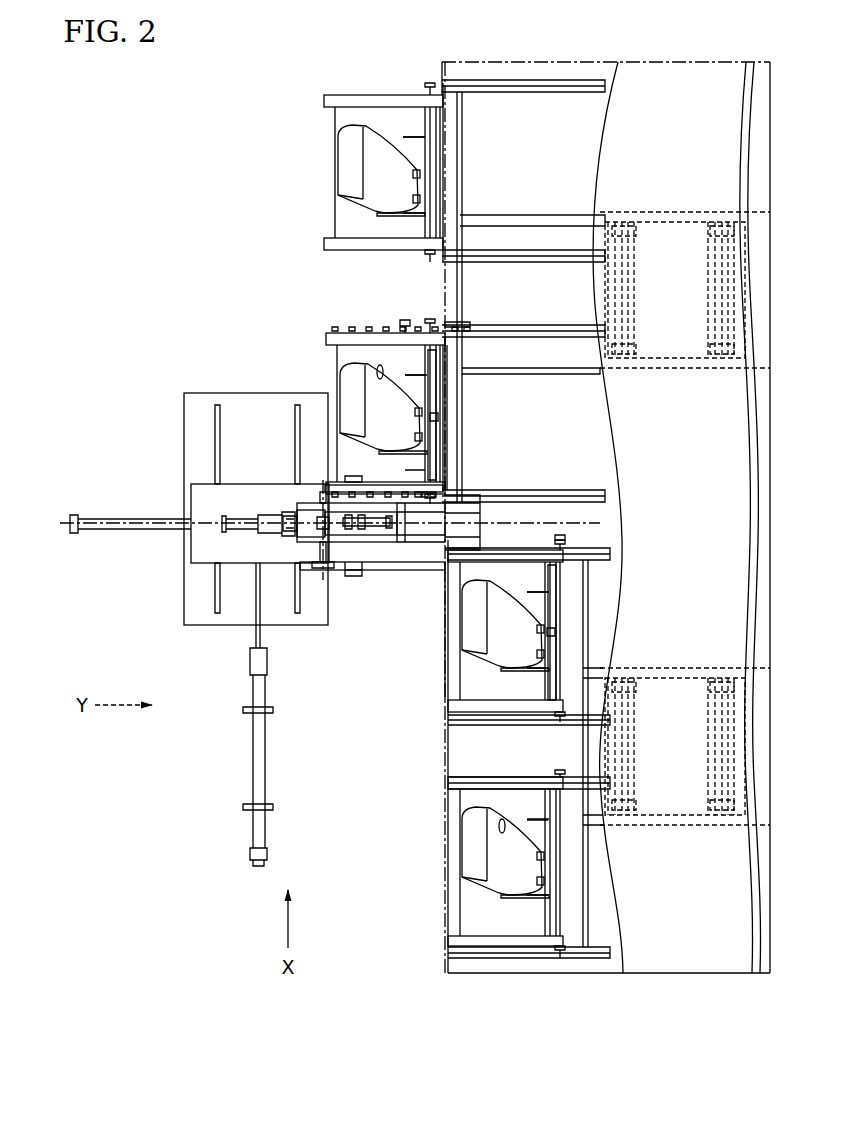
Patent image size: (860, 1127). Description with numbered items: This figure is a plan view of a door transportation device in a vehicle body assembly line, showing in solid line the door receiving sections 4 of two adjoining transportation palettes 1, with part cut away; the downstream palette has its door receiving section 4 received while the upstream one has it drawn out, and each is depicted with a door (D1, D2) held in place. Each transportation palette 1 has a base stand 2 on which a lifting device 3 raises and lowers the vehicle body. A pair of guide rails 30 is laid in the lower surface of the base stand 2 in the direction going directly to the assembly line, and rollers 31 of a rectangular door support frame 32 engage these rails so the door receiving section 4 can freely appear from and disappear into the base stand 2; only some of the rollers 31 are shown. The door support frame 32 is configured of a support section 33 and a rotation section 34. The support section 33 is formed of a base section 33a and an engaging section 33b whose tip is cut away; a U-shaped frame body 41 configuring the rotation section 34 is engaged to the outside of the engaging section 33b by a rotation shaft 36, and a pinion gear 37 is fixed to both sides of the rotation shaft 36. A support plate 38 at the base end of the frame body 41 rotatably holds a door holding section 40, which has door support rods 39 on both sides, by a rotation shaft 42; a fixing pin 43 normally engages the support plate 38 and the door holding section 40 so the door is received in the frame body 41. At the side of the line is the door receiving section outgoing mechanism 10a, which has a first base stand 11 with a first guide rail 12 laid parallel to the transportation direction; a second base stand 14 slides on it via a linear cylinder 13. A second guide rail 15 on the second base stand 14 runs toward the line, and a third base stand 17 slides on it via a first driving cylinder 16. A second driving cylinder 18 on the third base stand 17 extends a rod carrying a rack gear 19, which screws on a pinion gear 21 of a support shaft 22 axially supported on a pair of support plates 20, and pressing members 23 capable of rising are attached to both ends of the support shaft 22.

The transportation palette 1 is at (408, 72).
The base stand 2 is at (486, 72).
The lifting device 3 is at (652, 210).
The door receiving section 4 is at (318, 213).
The door receiving section outgoing mechanism 10a is at (330, 571).
The first base stand 11 is at (197, 427).
The first guide rail 12 is at (217, 402).
The linear cylinder 13 is at (253, 758).
The second base stand 14 is at (203, 495).
The second guide rail 15 is at (292, 510).
The first driving cylinder 16 is at (128, 519).
The third base stand 17 is at (321, 512).
The second driving cylinder 18 is at (373, 535).
The rack gear 19 is at (318, 522).
The support plates 20 is at (331, 580).
The pinion gear 21 is at (306, 528).
The support shaft 22 is at (313, 575).
The pressing members 23 is at (352, 476).
The guide rails 30 is at (520, 93).
The rollers 31 is at (336, 326).
The door support frame 32 is at (462, 177).
The support section 33 is at (482, 452).
The base section 33a is at (455, 412).
The engaging section 33b is at (455, 473).
The rotation section 34 is at (399, 528).
The rotation shaft 36 is at (425, 323).
The pinion gear 37 is at (432, 320).
The support plate 38 is at (438, 345).
The door support rods 39 is at (420, 358).
The door holding section 40 is at (432, 392).
The frame body 41 is at (376, 338).
The rotation shaft 42 is at (432, 418).
The fixing pin 43 is at (433, 370).
The seat D1 is at (372, 165).
The seat D2 is at (390, 385).